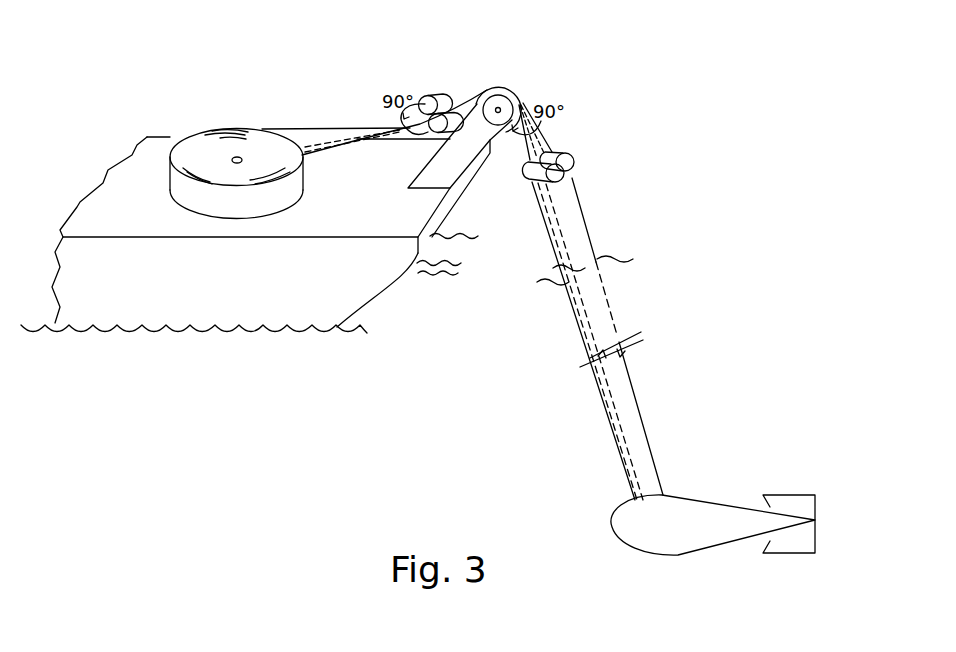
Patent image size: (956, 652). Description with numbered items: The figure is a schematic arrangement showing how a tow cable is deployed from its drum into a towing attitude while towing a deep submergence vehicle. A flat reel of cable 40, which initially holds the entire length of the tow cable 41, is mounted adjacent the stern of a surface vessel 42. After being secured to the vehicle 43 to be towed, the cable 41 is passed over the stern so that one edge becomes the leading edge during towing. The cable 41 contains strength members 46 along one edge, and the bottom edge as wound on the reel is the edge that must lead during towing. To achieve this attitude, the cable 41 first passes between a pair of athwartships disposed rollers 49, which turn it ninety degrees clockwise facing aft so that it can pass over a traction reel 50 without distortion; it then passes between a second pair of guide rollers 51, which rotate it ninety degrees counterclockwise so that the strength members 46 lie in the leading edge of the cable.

The flat reel of cable 40 is at (220, 130).
The tow cable 41 is at (307, 130).
The surface vessel 42 is at (345, 282).
The vehicle 43 is at (705, 507).
The strength members 46 is at (340, 142).
The athwartships disposed rollers 49 is at (452, 120).
The traction reel 50 is at (503, 92).
The guide rollers 51 is at (557, 174).